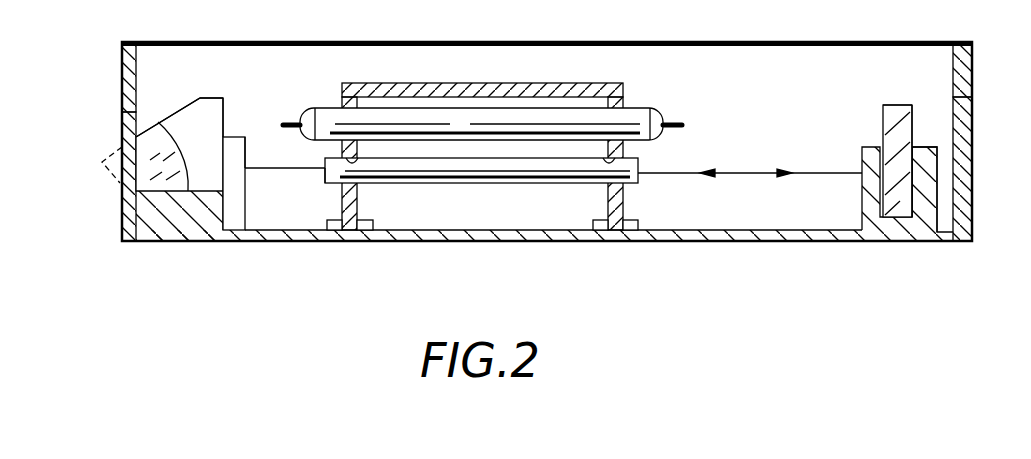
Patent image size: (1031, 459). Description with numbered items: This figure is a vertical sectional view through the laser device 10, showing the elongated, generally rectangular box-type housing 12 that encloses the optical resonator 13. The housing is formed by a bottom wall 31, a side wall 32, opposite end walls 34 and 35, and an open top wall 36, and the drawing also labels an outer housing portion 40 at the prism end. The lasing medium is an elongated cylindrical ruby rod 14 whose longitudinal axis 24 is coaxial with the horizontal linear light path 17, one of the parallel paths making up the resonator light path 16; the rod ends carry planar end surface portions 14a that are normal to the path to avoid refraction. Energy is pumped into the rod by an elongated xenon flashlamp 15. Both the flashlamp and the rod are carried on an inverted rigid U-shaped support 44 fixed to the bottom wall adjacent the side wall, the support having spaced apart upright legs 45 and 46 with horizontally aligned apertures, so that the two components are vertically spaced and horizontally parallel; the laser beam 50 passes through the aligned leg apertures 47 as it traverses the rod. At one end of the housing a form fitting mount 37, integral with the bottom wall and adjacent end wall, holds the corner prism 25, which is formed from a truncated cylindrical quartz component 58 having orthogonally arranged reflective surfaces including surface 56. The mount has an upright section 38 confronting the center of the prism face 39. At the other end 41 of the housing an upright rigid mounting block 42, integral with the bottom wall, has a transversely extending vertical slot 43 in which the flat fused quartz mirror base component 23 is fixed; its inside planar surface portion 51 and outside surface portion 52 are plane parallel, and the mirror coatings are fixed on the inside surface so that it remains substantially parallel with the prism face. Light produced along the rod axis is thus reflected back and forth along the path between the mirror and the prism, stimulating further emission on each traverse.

The laser device 10 is at (548, 128).
The housing 12 is at (459, 43).
The optical resonator 13 is at (913, 135).
The ruby rod 14 is at (483, 168).
The planar end surface portions 14a is at (322, 182).
The xenon flashlamp 15 is at (657, 110).
The resonator light path 16 is at (750, 176).
The linear light path 17 is at (715, 170).
The mirror base component 23 is at (917, 147).
The longitudinal axis 24 is at (312, 172).
The corner prism 25 is at (186, 107).
The bottom wall 31 is at (466, 230).
The side wall 32 is at (620, 43).
The end wall 34 is at (122, 131).
The end wall 35 is at (972, 128).
The open top wall 36 is at (229, 43).
The form fitting mount 37 is at (258, 180).
The upright section 38 is at (246, 152).
The prism face 39 is at (224, 115).
The left wall outer surface 40 is at (122, 82).
The other end of housing 41 is at (972, 89).
The mounting block 42 is at (885, 180).
The vertical slot 43 is at (883, 140).
The U-shaped support 44 is at (482, 145).
The upright leg 45 is at (358, 199).
The upright leg 46 is at (606, 205).
The leg apertures 47 is at (362, 158).
The laser beam 50 is at (273, 168).
The inside planar surface portion 51 is at (895, 143).
The outside surface portion 52 is at (912, 105).
The reflective surface 56 is at (203, 123).
The cylindrical quartz component 58 is at (200, 98).